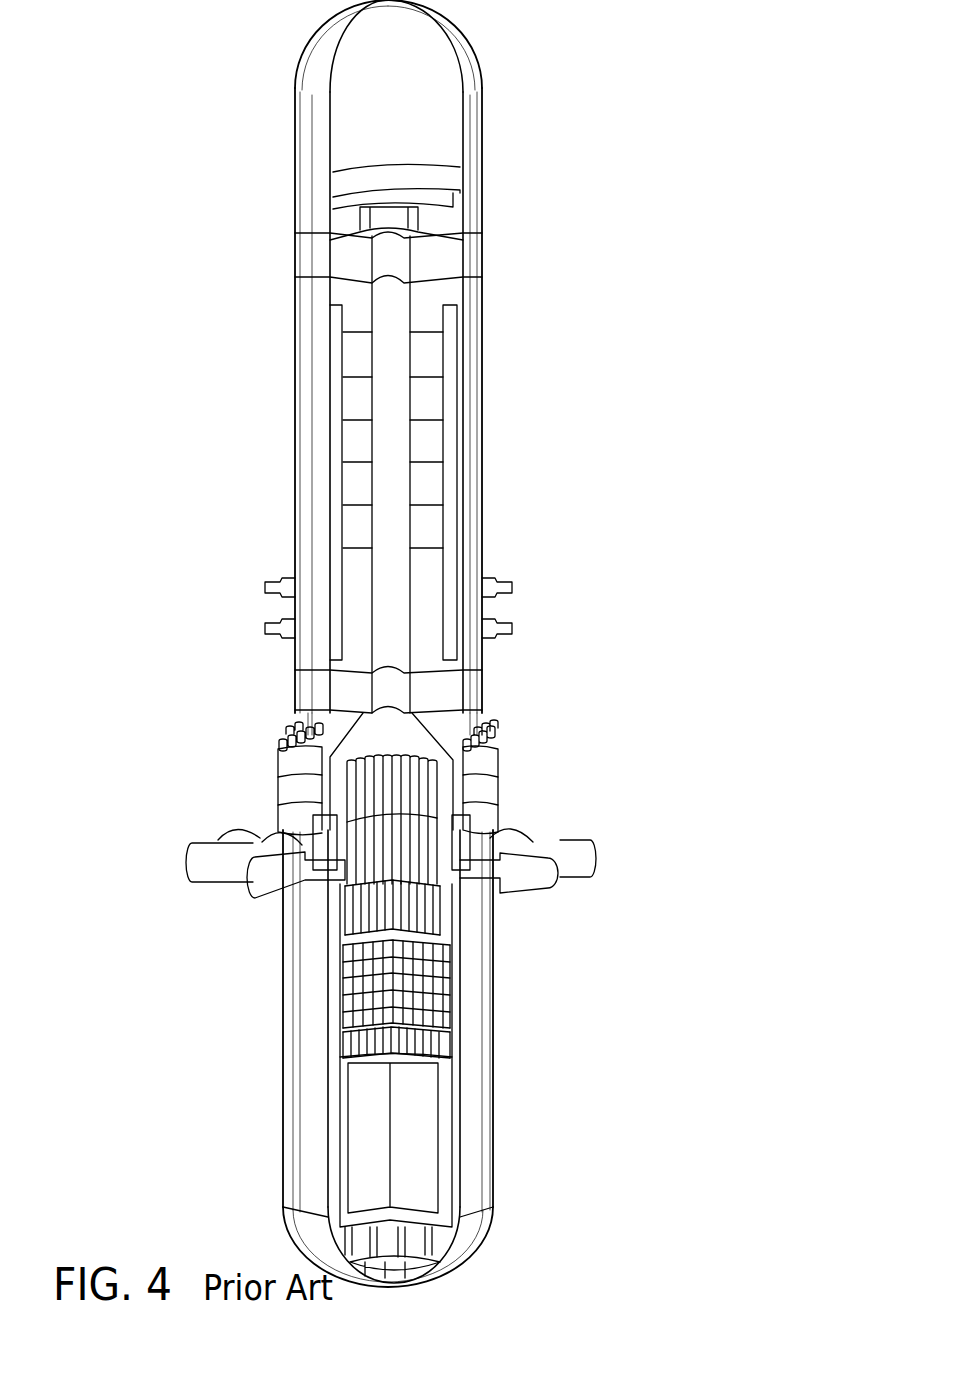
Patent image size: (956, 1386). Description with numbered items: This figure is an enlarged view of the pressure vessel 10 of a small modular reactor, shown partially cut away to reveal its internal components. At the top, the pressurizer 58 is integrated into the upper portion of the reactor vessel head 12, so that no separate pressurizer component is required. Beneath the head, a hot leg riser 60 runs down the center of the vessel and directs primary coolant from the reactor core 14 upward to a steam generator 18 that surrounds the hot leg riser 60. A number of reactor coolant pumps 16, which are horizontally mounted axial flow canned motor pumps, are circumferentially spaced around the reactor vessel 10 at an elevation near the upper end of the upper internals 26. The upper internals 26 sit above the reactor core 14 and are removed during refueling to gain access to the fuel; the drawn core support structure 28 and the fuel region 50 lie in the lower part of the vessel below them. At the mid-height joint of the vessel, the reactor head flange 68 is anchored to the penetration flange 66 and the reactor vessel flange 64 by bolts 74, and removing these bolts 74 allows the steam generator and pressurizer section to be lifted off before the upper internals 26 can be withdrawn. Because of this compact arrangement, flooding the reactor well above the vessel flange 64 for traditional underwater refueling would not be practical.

The pressure vessel 10 is at (493, 1060).
The reactor vessel head 12 is at (483, 328).
The reactor core 14 is at (427, 1170).
The reactor coolant pumps 16 is at (583, 855).
The steam generator 18 is at (423, 460).
The upper internals 26 is at (350, 983).
The core support plate 28 is at (442, 1038).
The fuel assemblies / core region 50 is at (440, 918).
The pressurizer 58 is at (437, 128).
The hot leg riser 60 is at (395, 532).
The reactor vessel flange 64 is at (492, 810).
The penetration flange 66 is at (492, 787).
The reactor head flange 68 is at (492, 757).
The bolts 74 is at (492, 735).